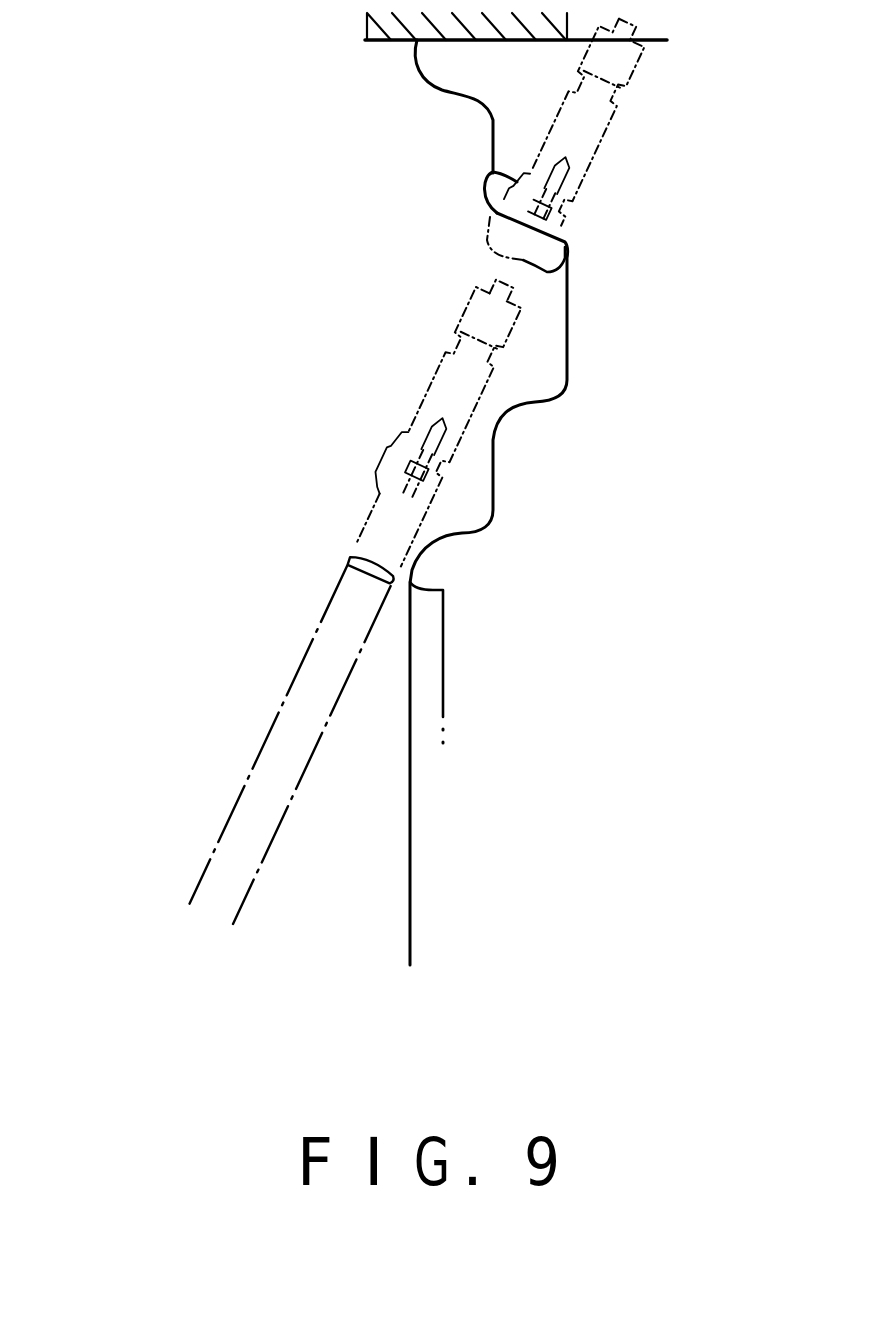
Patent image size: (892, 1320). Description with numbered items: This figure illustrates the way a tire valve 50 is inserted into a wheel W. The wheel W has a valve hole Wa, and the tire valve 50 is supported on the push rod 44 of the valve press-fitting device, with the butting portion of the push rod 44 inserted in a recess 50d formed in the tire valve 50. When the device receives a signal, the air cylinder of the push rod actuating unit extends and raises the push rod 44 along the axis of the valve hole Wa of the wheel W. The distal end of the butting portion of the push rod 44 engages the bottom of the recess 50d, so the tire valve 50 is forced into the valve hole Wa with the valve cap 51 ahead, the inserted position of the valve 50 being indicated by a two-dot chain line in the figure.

The wheel W is at (500, 128).
The valve hole Wa is at (488, 178).
The tire valve 50 is at (587, 136).
The valve cap 51 is at (470, 322).
The recess 50d is at (407, 487).
The push rod 44 is at (272, 750).